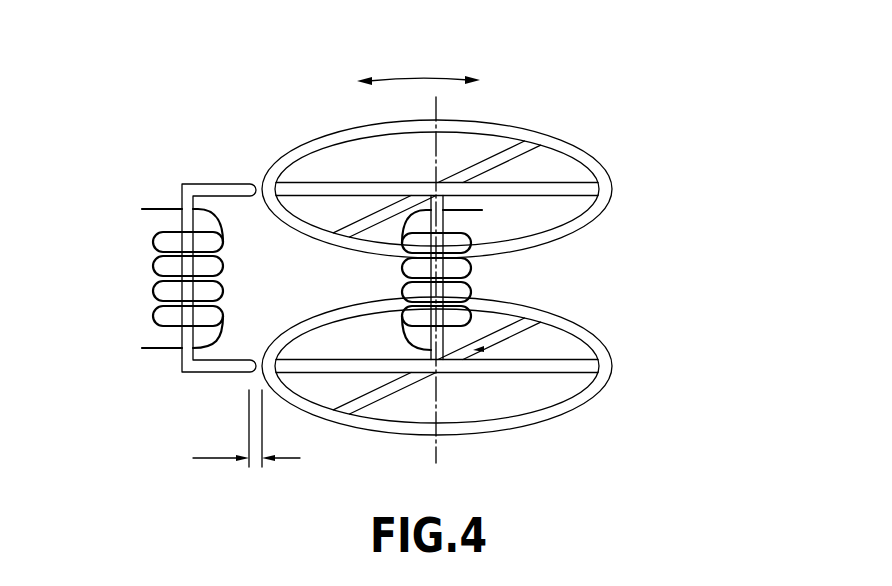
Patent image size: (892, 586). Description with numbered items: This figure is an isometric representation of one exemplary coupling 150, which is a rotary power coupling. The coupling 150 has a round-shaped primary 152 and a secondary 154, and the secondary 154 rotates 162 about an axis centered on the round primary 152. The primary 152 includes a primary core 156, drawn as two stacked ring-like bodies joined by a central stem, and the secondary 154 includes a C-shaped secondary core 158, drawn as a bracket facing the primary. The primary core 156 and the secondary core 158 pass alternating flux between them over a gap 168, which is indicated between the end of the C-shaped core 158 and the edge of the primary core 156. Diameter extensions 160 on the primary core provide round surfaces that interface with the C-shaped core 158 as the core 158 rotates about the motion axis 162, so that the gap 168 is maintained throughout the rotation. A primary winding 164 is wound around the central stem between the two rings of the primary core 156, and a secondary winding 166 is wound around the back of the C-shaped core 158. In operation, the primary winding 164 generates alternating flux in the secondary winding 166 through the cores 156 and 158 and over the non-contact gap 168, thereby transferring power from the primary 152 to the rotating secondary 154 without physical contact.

The coupling 150 is at (701, 64).
The primary 152 is at (618, 258).
The secondary 154 is at (152, 436).
The primary core 156 is at (575, 403).
The secondary core 158 is at (212, 183).
The diameter extensions 160 is at (476, 120).
The motion axis 162 is at (408, 78).
The primary winding 164 is at (468, 285).
The secondary winding 166 is at (157, 293).
The gap 168 is at (253, 462).